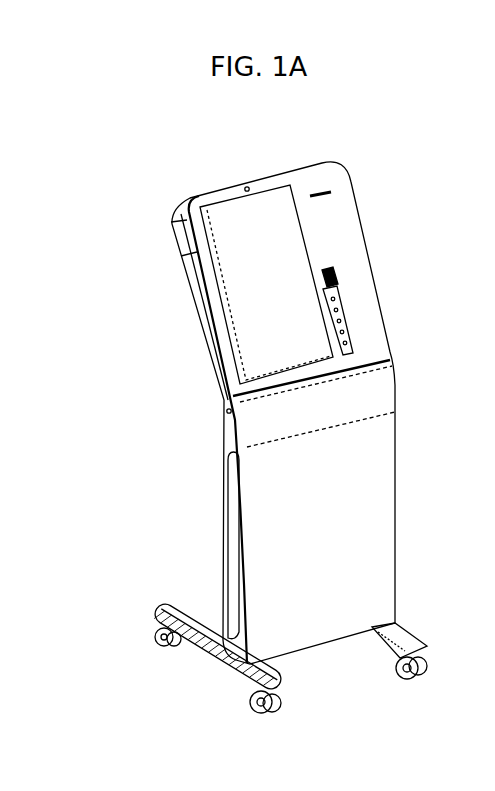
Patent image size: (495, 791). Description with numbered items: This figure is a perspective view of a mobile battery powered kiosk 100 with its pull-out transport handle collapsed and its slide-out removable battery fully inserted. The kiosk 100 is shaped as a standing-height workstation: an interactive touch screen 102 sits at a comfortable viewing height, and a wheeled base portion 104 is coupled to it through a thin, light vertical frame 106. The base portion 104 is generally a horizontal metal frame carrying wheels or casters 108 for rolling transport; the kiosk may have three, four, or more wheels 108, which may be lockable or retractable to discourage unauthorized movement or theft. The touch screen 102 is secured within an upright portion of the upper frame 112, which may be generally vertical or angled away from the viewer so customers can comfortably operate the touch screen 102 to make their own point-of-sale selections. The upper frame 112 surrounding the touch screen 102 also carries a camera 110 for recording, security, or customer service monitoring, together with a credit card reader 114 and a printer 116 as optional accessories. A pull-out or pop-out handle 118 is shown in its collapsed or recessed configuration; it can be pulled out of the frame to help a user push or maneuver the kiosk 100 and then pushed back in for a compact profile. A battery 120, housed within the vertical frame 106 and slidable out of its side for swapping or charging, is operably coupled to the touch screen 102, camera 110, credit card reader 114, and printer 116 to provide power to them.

The mobile battery powered kiosk 100 is at (132, 182).
The interactive touch screen 102 is at (266, 284).
The base portion 104 is at (203, 634).
The vertical frame 106 is at (398, 516).
The wheels 108 is at (158, 640).
The camera 110 is at (240, 191).
The upper frame 112 is at (194, 292).
The credit card reader 114 is at (341, 312).
The printer 116 is at (316, 194).
The pull-out handle 118 is at (226, 412).
The battery 120 is at (238, 528).